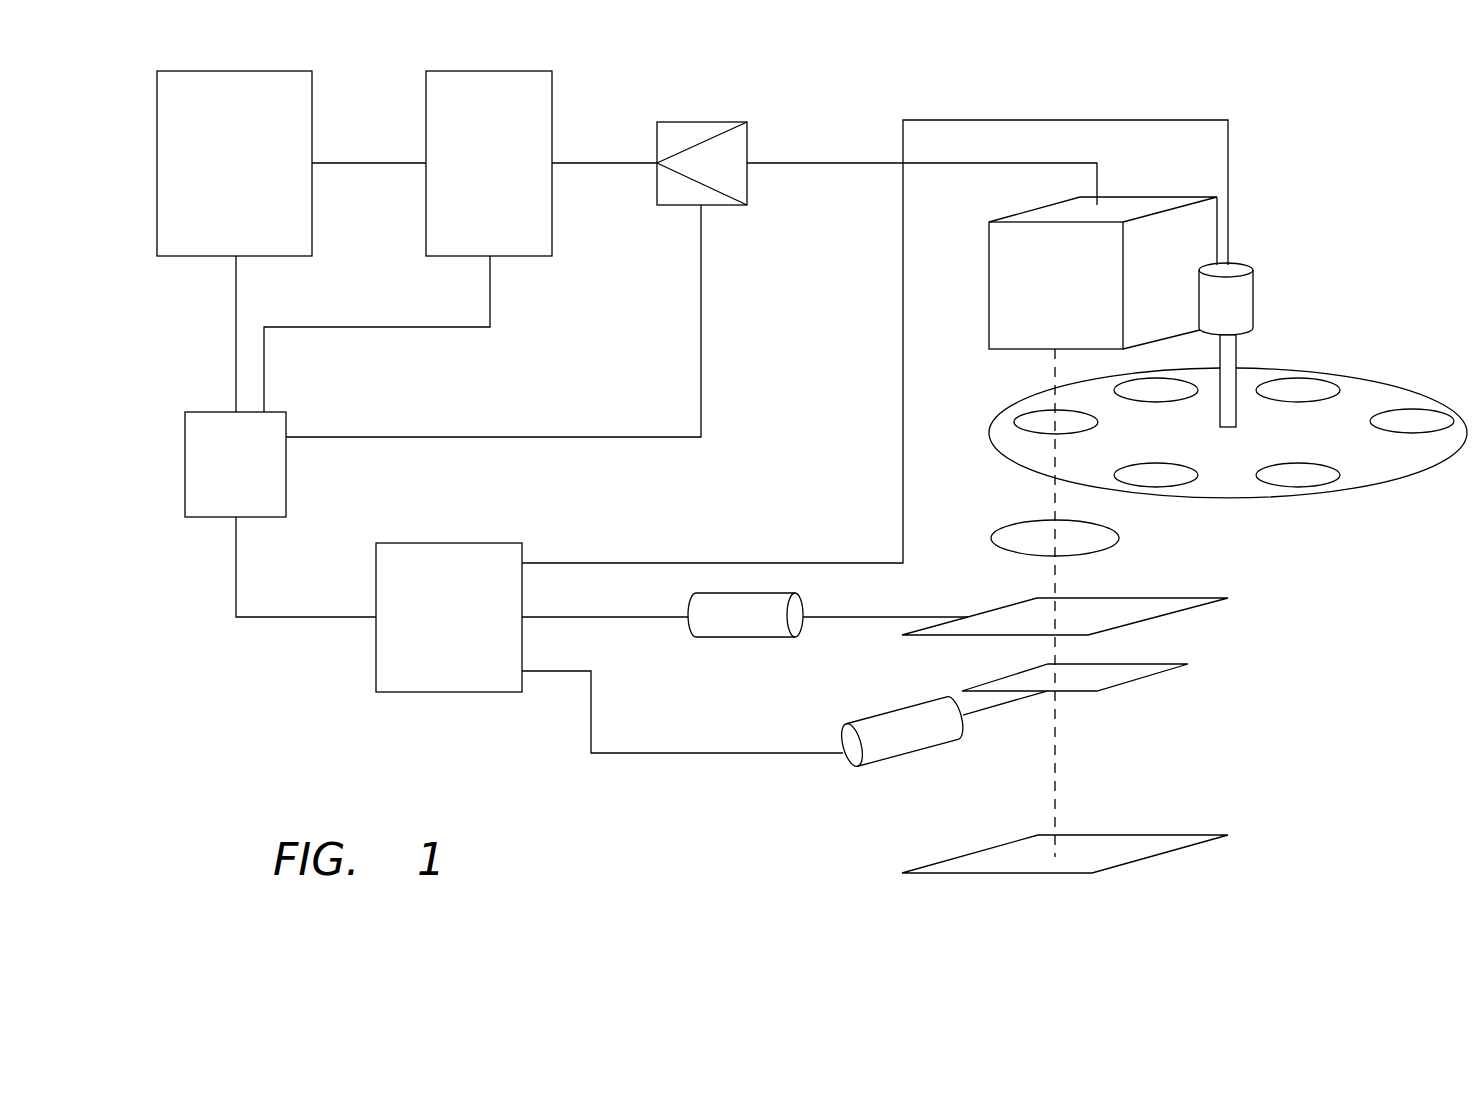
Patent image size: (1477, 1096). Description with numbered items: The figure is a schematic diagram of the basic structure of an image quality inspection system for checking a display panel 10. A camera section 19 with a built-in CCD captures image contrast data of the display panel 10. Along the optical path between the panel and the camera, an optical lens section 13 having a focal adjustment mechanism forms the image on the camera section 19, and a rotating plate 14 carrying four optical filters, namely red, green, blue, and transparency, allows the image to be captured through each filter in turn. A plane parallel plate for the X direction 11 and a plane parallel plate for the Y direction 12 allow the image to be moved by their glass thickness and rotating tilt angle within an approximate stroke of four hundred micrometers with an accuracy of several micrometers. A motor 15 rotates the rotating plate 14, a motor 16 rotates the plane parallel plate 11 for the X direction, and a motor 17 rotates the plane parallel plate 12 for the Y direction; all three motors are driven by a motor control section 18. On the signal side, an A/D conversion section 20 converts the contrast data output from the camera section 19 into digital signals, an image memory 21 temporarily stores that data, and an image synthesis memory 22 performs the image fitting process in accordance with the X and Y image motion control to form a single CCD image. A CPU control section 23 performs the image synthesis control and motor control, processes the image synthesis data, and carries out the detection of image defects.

The display panel 10 is at (1143, 845).
The plane parallel plate for the X direction 11 is at (1167, 605).
The plane parallel plate for the Y direction 12 is at (1137, 670).
The optical lens section 13 is at (1096, 537).
The rotating plate 14 is at (1370, 387).
The motor 15 is at (1242, 303).
The motor 16 is at (747, 633).
The motor 17 is at (910, 708).
The motor control section 18 is at (465, 552).
The camera section 19 is at (1002, 270).
The A/D conversion section 20 is at (678, 125).
The image memory 21 is at (457, 78).
The image synthesis memory 22 is at (212, 80).
The CPU control section 23 is at (213, 428).